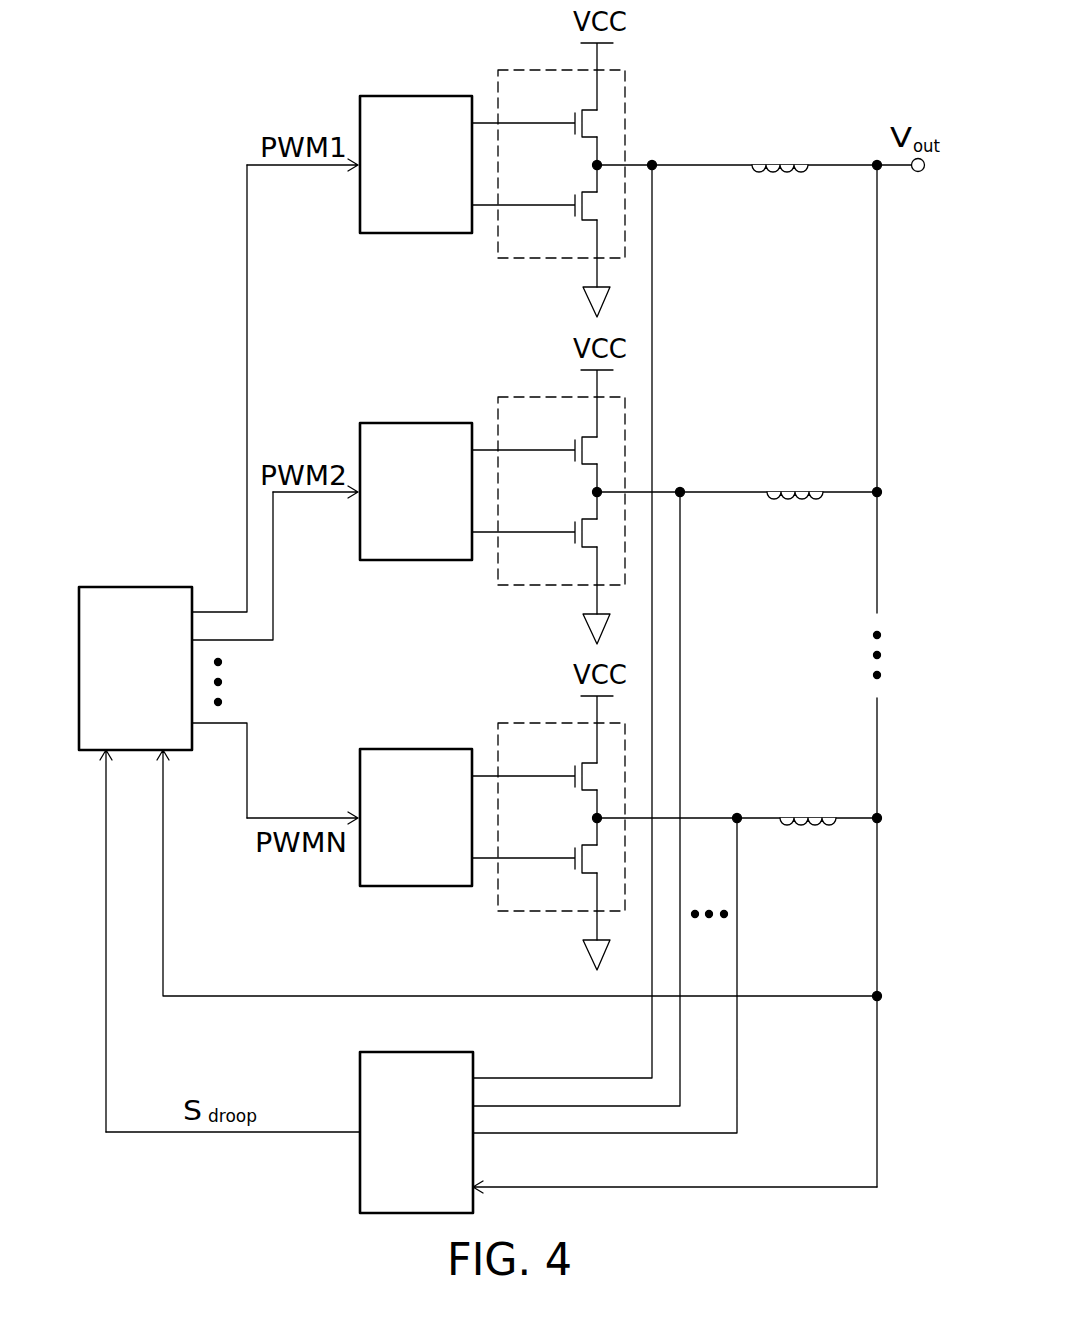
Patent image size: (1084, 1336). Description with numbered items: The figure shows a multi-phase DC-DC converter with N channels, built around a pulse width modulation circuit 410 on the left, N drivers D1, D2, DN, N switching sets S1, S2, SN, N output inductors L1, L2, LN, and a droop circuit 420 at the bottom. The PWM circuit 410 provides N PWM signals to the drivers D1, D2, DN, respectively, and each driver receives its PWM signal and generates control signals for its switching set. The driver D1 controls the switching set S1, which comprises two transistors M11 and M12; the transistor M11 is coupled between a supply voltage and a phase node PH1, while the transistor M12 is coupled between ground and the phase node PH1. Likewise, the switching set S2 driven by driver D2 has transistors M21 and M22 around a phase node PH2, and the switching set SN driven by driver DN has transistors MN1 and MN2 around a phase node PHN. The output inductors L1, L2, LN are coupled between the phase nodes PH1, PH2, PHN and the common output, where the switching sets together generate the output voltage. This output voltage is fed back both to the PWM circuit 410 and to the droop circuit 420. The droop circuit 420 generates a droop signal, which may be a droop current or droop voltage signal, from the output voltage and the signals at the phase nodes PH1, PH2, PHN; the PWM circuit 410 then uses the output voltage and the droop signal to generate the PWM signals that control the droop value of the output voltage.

The pulse width modulation circuit 410 is at (105, 587).
The droop circuit 420 is at (388, 1052).
The driver D1 is at (388, 96).
The driver D2 is at (416, 472).
The driver DN is at (416, 798).
The switching set S1 is at (560, 70).
The switching set S2 is at (548, 504).
The switching set SN is at (548, 829).
The transistor M11 is at (588, 110).
The transistor M12 is at (588, 220).
The transistor M21 is at (534, 436).
The transistor M22 is at (534, 546).
The transistor MN1 is at (534, 761).
The transistor MN2 is at (534, 873).
The phase node PH1 is at (654, 168).
The phase node PH2 is at (717, 510).
The phase node PHN is at (778, 836).
The output inductor L1 is at (757, 162).
The output inductor L2 is at (800, 475).
The output inductor LN is at (816, 801).